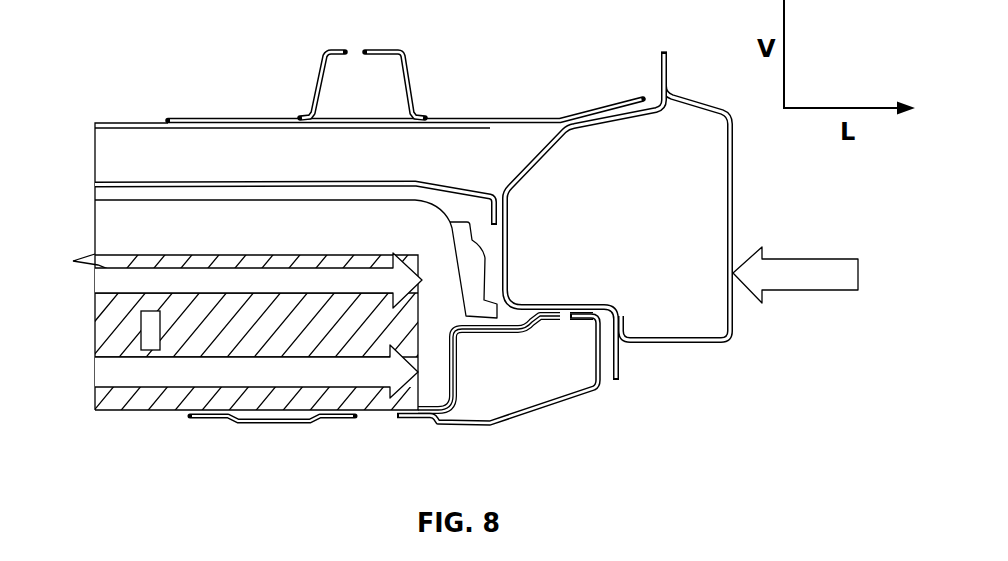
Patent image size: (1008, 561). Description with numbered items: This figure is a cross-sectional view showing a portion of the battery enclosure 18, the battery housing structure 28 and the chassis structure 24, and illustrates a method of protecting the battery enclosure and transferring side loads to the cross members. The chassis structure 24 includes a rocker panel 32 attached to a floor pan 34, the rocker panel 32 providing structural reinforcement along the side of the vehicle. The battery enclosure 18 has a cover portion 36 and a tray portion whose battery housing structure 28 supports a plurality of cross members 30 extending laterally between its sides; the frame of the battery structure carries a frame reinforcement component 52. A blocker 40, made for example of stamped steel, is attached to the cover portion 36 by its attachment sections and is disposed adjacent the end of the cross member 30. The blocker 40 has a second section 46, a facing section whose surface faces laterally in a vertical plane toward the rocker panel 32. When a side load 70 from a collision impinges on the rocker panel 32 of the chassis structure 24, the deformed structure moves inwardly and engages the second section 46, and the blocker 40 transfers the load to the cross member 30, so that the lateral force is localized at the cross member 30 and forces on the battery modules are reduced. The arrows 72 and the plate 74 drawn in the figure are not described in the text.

The battery enclosure 18 is at (94, 224).
The chassis structure 24 is at (748, 336).
The battery housing structure 28 is at (580, 375).
The cross member 30 is at (168, 408).
The rocker panel 32 is at (733, 215).
The floor pan 34 is at (145, 127).
The cover portion 36 is at (145, 200).
The blocker 40 is at (478, 250).
The second section 46 is at (490, 272).
The frame reinforcement component 52 is at (425, 418).
The side load 70 is at (823, 280).
The load path arrows 72 is at (273, 280).
The lower plate 74 is at (300, 375).